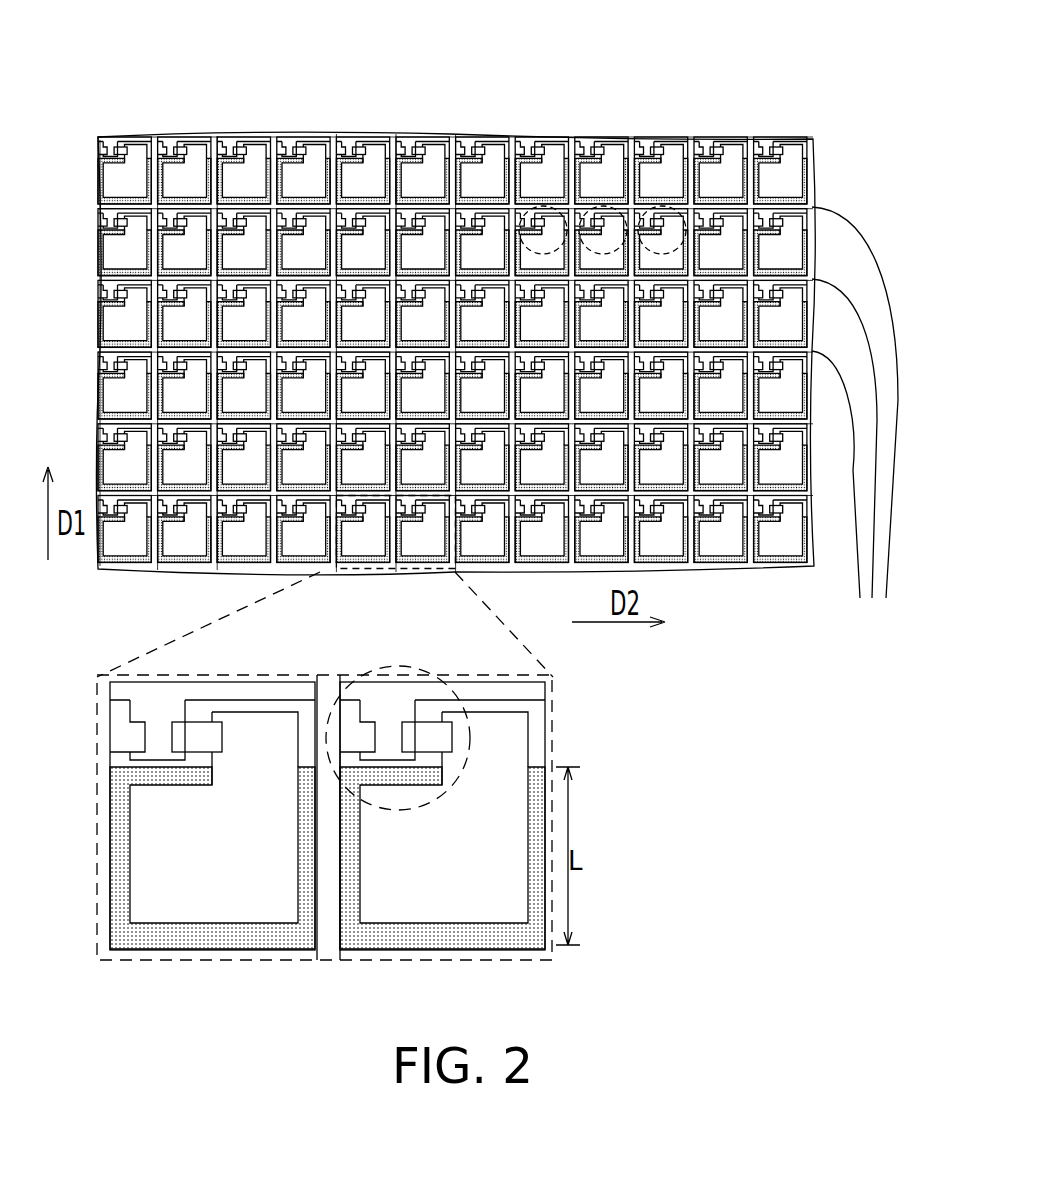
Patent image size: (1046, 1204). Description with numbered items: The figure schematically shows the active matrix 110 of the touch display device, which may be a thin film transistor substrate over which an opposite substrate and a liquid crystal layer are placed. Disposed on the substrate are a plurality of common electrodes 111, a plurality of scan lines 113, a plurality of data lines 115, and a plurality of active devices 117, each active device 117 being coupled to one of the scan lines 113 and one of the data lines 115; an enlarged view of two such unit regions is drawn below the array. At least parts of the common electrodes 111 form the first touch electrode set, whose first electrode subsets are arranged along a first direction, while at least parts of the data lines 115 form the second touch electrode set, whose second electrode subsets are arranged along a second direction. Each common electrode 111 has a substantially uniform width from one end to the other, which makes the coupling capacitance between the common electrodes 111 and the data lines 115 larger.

The active matrix 110 is at (803, 82).
The common electrode 111 is at (895, 648).
The scan line 113 is at (100, 427).
The data line 115 is at (342, 987).
The active device 117 is at (660, 206).